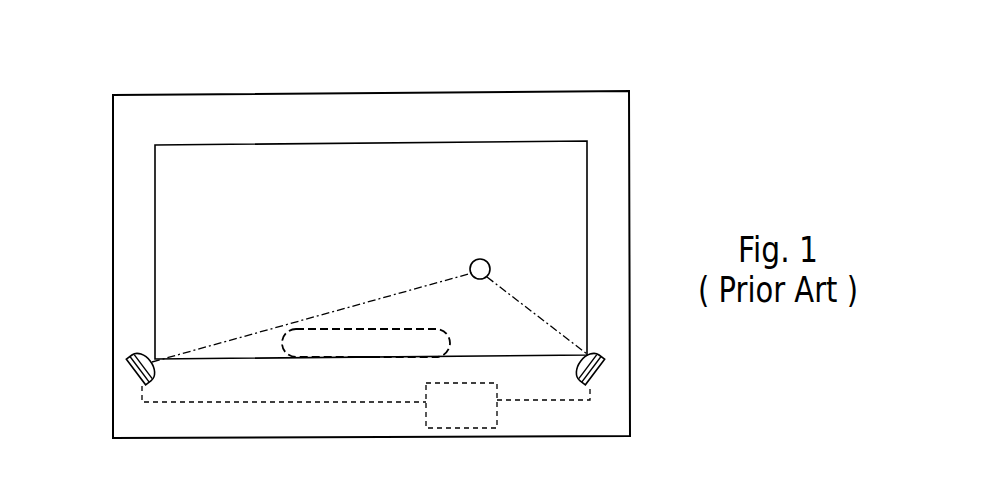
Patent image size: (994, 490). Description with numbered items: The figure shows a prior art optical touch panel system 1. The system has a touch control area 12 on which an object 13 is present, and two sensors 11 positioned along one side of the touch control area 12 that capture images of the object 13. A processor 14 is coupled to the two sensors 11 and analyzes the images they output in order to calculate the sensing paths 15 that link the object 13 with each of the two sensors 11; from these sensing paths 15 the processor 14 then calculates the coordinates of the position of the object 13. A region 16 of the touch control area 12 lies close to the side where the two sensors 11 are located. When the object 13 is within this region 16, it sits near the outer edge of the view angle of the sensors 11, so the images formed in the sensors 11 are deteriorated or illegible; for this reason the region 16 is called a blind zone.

The optical touch panel system 1 is at (101, 68).
The sensors 11 is at (129, 373).
The touch control area 12 is at (374, 150).
The object 13 is at (490, 270).
The processor 14 is at (459, 430).
The sensing paths 15 is at (537, 316).
The region 16 is at (367, 360).